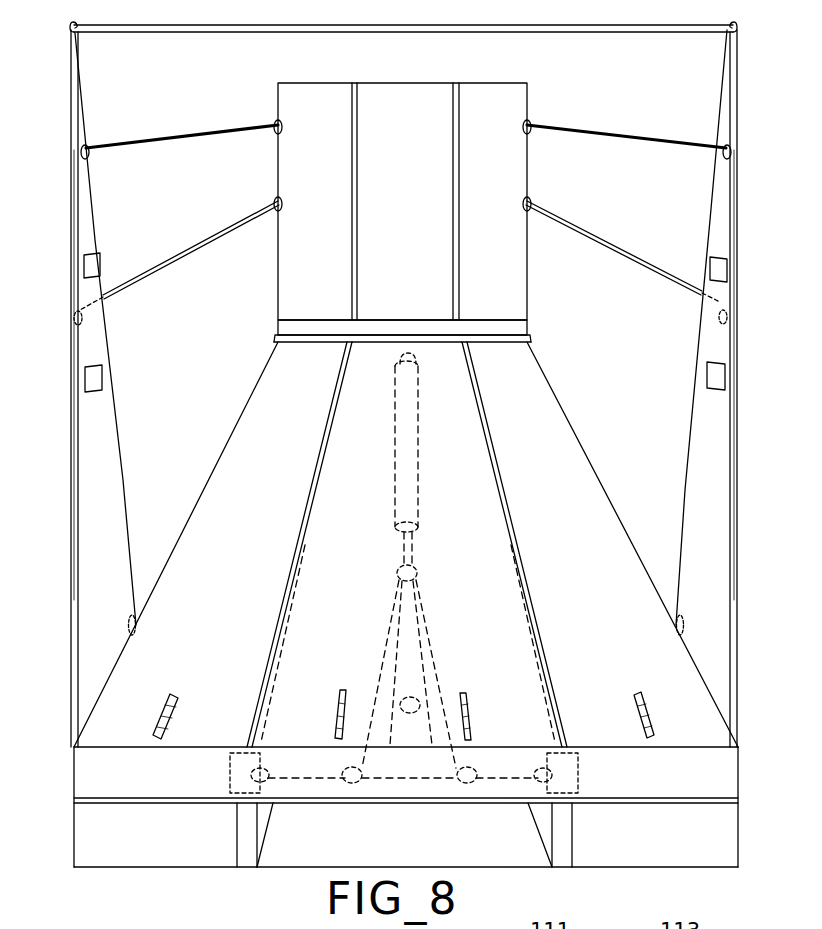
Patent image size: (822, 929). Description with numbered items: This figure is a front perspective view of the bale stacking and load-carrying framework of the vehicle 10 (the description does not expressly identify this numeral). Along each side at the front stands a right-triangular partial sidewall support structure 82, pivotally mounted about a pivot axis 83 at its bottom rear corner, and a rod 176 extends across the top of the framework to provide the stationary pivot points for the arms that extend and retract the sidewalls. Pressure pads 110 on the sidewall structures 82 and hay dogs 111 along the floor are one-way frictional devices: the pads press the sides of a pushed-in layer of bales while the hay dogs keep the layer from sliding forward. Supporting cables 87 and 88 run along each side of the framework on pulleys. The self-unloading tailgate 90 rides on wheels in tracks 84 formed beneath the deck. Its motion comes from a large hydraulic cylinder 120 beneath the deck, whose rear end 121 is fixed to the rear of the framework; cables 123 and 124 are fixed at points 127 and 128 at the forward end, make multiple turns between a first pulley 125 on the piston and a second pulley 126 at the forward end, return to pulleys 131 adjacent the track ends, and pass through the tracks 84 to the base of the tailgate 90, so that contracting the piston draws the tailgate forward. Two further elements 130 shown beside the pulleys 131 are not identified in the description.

The vehicle body / trailer 10 is at (563, 868).
The partial sidewall support structure 82 is at (70, 470).
The pivot axis 83 is at (137, 622).
The tracks 84 is at (229, 772).
The supporting cable 87 is at (184, 137).
The supporting cable 88 is at (187, 250).
The self-unloading tailgate 90 is at (420, 83).
The pressure pads 110 is at (95, 258).
The hay dogs 111 is at (180, 690).
The hydraulic cylinder 120 is at (395, 455).
The rear end of hydraulic cylinder 121 is at (417, 356).
The cable 123 is at (507, 769).
The cable 124 is at (283, 778).
The first pulley 125 is at (418, 573).
The second pulley 126 is at (418, 698).
The cable fixing point 127 is at (432, 746).
The cable fixing point 128 is at (390, 746).
The pulley 130 is at (352, 785).
The pulleys 131 is at (264, 784).
The rod 176 is at (600, 33).